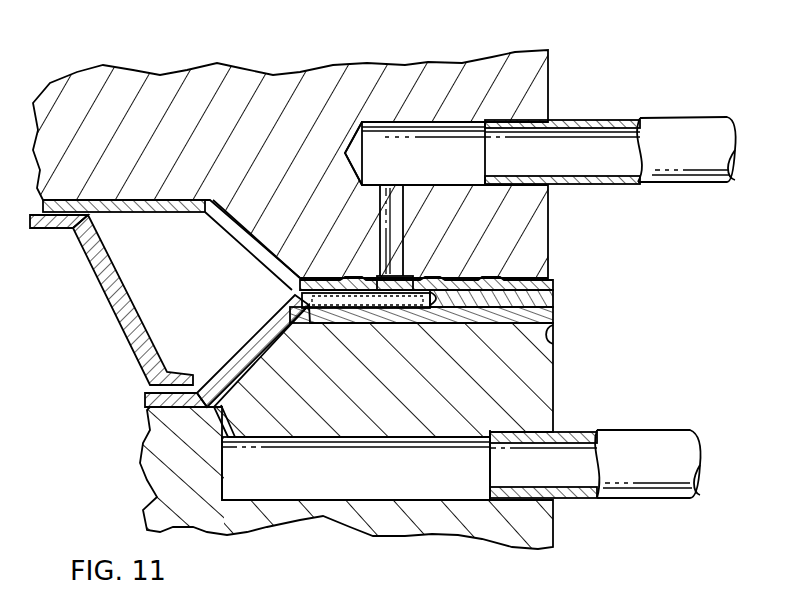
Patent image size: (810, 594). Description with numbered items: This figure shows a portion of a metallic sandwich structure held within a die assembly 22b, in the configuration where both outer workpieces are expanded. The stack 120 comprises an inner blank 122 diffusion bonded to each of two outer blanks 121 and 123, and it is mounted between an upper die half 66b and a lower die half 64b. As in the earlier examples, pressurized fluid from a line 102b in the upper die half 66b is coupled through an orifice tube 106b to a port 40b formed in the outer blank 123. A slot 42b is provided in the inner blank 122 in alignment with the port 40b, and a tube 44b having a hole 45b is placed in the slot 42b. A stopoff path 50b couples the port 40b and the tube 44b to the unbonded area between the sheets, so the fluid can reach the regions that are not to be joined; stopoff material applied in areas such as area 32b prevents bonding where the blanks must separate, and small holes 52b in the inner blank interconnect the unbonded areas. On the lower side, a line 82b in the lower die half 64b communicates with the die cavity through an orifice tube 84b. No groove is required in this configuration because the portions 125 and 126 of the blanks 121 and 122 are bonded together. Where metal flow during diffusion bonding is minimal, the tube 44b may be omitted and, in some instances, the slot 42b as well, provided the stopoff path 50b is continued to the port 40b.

The valve assembly 22b is at (688, 258).
The diaphragm wall 32b is at (178, 316).
The port 40b is at (414, 279).
The slot 42b is at (440, 303).
The tube 44b is at (358, 310).
The hole 45b is at (387, 273).
The stopoff path 50b is at (296, 287).
The diaphragm flange 52b is at (123, 325).
The lower die half 64b is at (557, 400).
The upper die half 66b is at (590, 56).
The lower hose 82b is at (656, 487).
The lower tube 84b is at (428, 500).
The line 102b is at (668, 118).
The orifice tube 106b is at (379, 120).
The stack 120 is at (555, 348).
The outer blank 121 is at (555, 320).
The inner blank 122 is at (555, 297).
The outer blank 123 is at (555, 280).
The portion of blank 121 125 is at (250, 384).
The portion of blank 122 126 is at (242, 342).